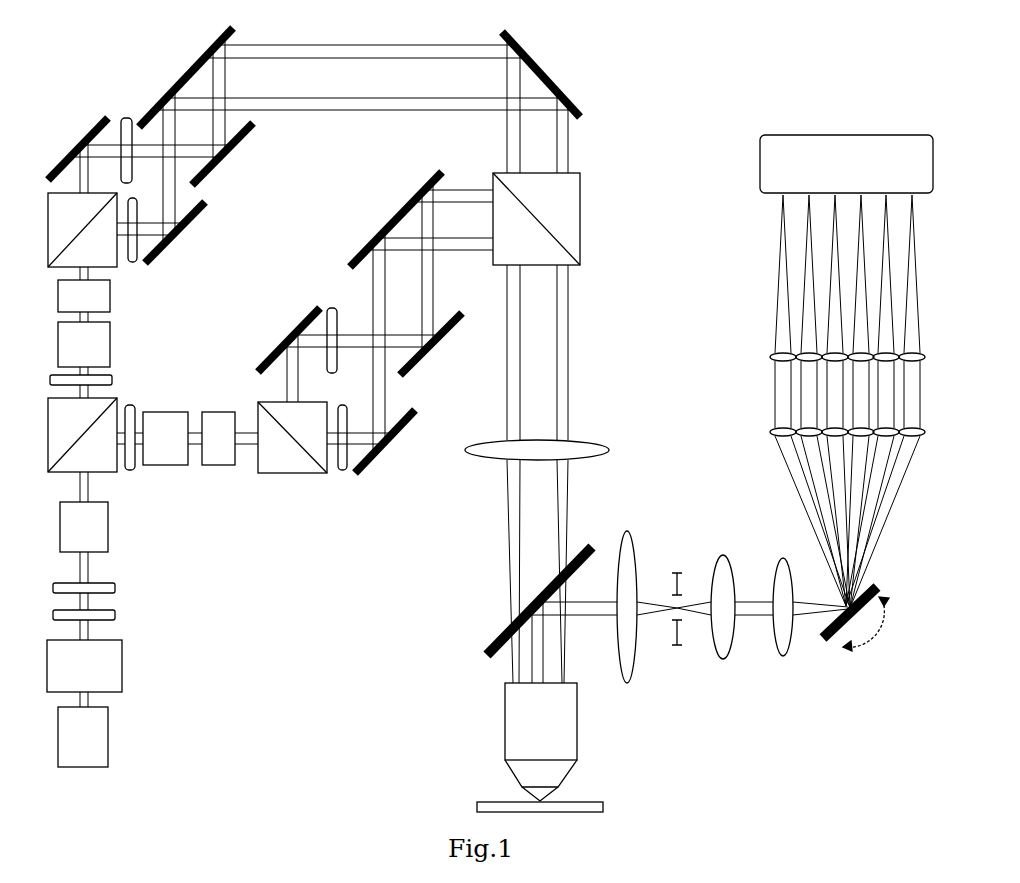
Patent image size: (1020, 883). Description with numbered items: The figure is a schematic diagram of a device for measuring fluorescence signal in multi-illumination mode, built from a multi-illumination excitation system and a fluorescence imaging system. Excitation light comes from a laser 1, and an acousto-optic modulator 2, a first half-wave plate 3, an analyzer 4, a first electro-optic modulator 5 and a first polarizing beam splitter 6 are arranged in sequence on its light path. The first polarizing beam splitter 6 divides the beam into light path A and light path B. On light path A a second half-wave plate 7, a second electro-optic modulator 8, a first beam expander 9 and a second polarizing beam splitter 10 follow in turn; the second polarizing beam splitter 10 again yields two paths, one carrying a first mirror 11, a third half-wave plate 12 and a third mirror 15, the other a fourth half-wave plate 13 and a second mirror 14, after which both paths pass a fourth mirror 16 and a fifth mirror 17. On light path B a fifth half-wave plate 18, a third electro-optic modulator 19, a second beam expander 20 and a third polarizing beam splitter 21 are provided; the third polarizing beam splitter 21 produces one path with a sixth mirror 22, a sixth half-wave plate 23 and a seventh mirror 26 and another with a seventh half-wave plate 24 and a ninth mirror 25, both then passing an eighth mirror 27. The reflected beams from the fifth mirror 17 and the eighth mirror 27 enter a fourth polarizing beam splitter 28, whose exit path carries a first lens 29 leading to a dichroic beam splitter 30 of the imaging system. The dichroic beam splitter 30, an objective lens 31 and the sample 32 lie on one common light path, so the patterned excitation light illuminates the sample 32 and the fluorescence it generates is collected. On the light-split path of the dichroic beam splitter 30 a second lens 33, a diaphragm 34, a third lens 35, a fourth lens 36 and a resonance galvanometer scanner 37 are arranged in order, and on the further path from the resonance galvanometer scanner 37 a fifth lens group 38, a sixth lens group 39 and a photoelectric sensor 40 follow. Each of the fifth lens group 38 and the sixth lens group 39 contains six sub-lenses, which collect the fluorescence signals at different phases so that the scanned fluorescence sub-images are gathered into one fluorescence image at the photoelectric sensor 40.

The laser 1 is at (83, 737).
The acousto-optic modulator 2 is at (84, 666).
The first half-wave plate 3 is at (71, 617).
The analyzer 4 is at (71, 587).
The first electro-optic modulator 5 is at (84, 527).
The first polarizing beam splitter 6 is at (67, 435).
The second half-wave plate 7 is at (64, 382).
The second electro-optic modulator 8 is at (84, 344).
The optical element 9 is at (84, 296).
The second polarizing beam splitter 10 is at (71, 230).
The first mirror 11 is at (78, 149).
The third half-wave plate 12 is at (126, 139).
The fourth half-wave plate 13 is at (130, 239).
The second mirror 14 is at (175, 232).
The third mirror 15 is at (222, 154).
The fourth mirror 16 is at (186, 77).
The fifth mirror 17 is at (541, 74).
The fifth half-wave plate 18 is at (130, 449).
The third electro-optic modulator 19 is at (165, 438).
The second beam expander 20 is at (218, 438).
The third polarizing beam splitter 21 is at (292, 449).
The sixth mirror 22 is at (289, 340).
The sixth half-wave plate 23 is at (329, 330).
The seventh half-wave plate 24 is at (343, 449).
The ninth mirror 25 is at (385, 441).
The seventh mirror 26 is at (431, 344).
The eighth mirror 27 is at (396, 219).
The fourth polarizing beam splitter 28 is at (548, 219).
The first lens 29 is at (548, 450).
The dichroic beam splitter 30 is at (523, 602).
The objective lens 31 is at (511, 742).
The sample 32 is at (522, 804).
The second lens 33 is at (627, 622).
The diaphragm 34 is at (676, 624).
The third lens 35 is at (723, 616).
The fourth lens 36 is at (783, 596).
The resonance galvanometer scanner 37 is at (861, 610).
The fifth lens group 38 is at (835, 432).
The sixth lens group 39 is at (835, 357).
The photoelectric sensor 40 is at (846, 164).